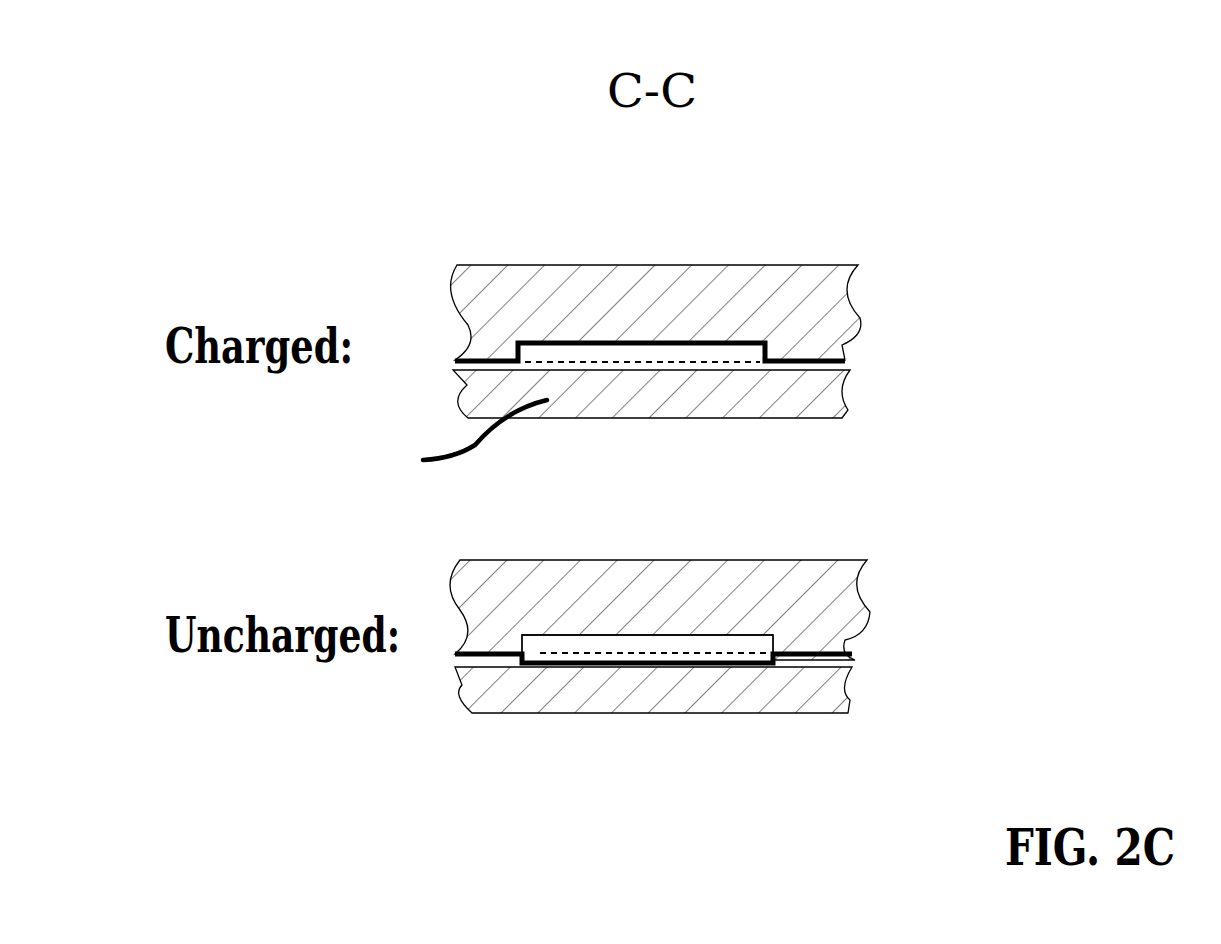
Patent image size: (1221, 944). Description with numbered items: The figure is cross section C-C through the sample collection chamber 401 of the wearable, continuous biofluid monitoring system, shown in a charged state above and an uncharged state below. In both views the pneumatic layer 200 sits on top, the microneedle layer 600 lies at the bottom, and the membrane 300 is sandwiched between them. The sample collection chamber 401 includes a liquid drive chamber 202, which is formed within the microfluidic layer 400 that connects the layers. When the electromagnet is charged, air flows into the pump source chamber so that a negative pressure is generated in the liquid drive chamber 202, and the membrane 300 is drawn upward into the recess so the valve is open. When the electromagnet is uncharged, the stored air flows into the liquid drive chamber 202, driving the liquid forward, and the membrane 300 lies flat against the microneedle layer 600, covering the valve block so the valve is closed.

The pneumatic layer 200 is at (593, 287).
The liquid drive chamber 202 is at (703, 348).
The membrane 300 is at (520, 358).
The microfluidic layer 400 is at (680, 363).
The sample collection chamber 401 is at (678, 224).
The microneedle layer 600 is at (618, 675).